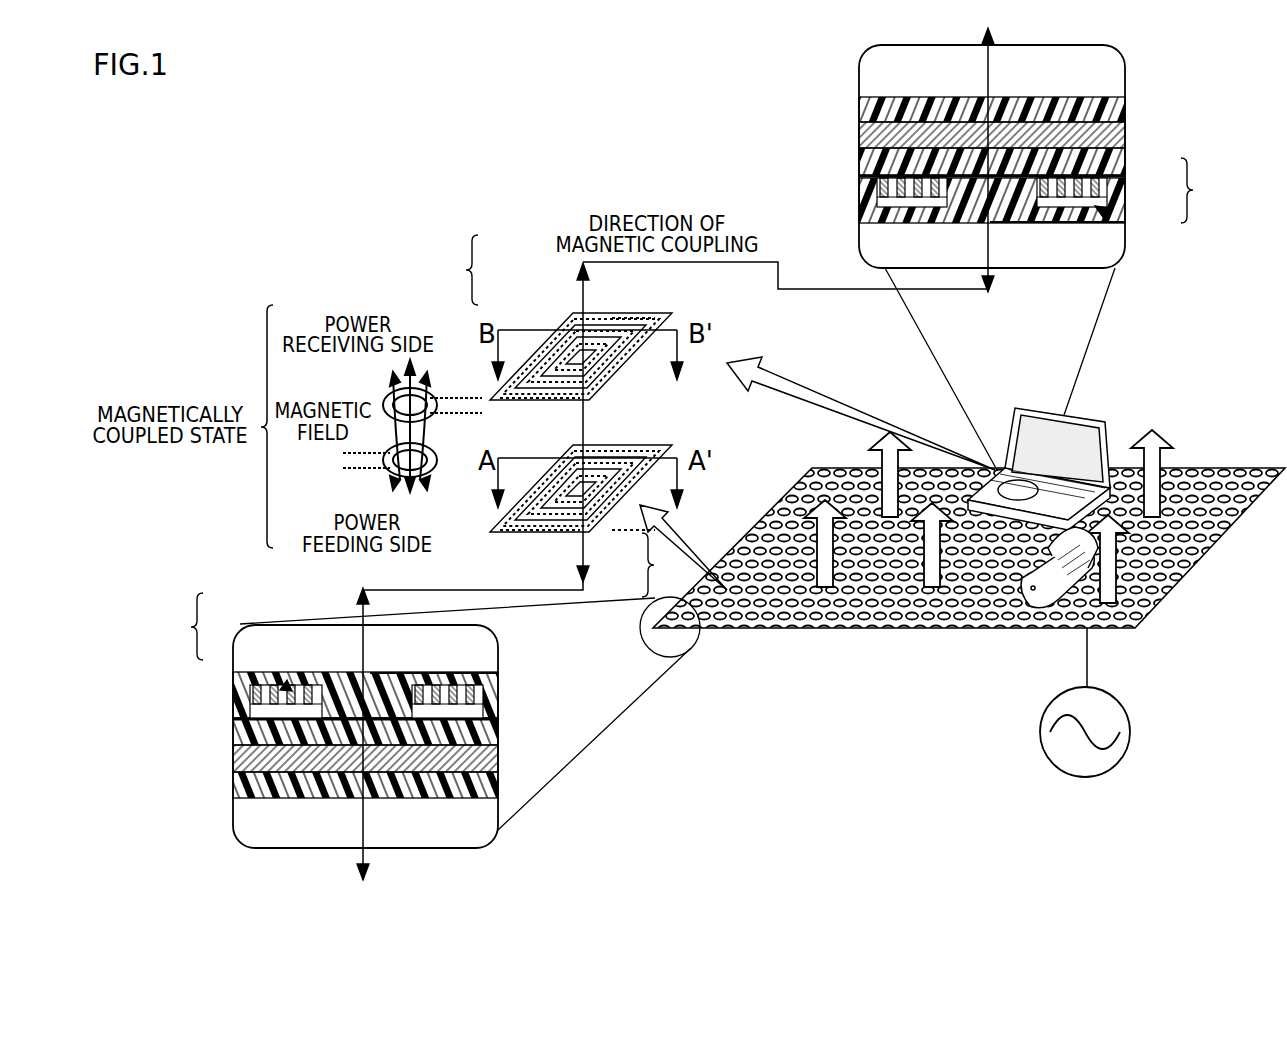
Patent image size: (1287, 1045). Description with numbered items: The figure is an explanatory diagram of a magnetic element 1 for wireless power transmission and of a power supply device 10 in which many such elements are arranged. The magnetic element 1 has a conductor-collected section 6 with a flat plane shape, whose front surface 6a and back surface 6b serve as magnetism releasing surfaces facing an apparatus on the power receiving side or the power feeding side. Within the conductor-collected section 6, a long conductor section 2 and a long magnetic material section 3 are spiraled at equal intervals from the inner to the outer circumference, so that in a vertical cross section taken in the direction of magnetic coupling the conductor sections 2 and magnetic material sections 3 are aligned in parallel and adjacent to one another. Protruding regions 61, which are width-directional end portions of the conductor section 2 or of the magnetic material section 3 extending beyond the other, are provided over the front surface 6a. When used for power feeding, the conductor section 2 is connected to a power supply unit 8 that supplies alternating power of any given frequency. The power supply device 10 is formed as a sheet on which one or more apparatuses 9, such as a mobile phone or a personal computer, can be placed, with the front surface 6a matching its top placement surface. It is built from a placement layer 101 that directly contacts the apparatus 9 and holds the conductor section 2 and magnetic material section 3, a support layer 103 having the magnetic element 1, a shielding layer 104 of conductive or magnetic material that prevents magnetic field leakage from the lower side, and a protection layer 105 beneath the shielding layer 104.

The magnetic element 1 is at (683, 307).
The conductor section 2 is at (1118, 183).
The magnetic material section 3 is at (1105, 193).
The conductor-collected section 6 is at (690, 409).
The front surface 6a is at (1058, 215).
The back surface 6b is at (1118, 167).
The power supply unit 8 is at (1133, 725).
The apparatus 9 is at (1150, 438).
The power supply device 10 is at (1225, 445).
The protruding region 61 is at (1103, 217).
The placement layer 101 is at (862, 205).
The support layer 103 is at (862, 162).
The shielding layer 104 is at (862, 134).
The protection layer 105 is at (862, 106).